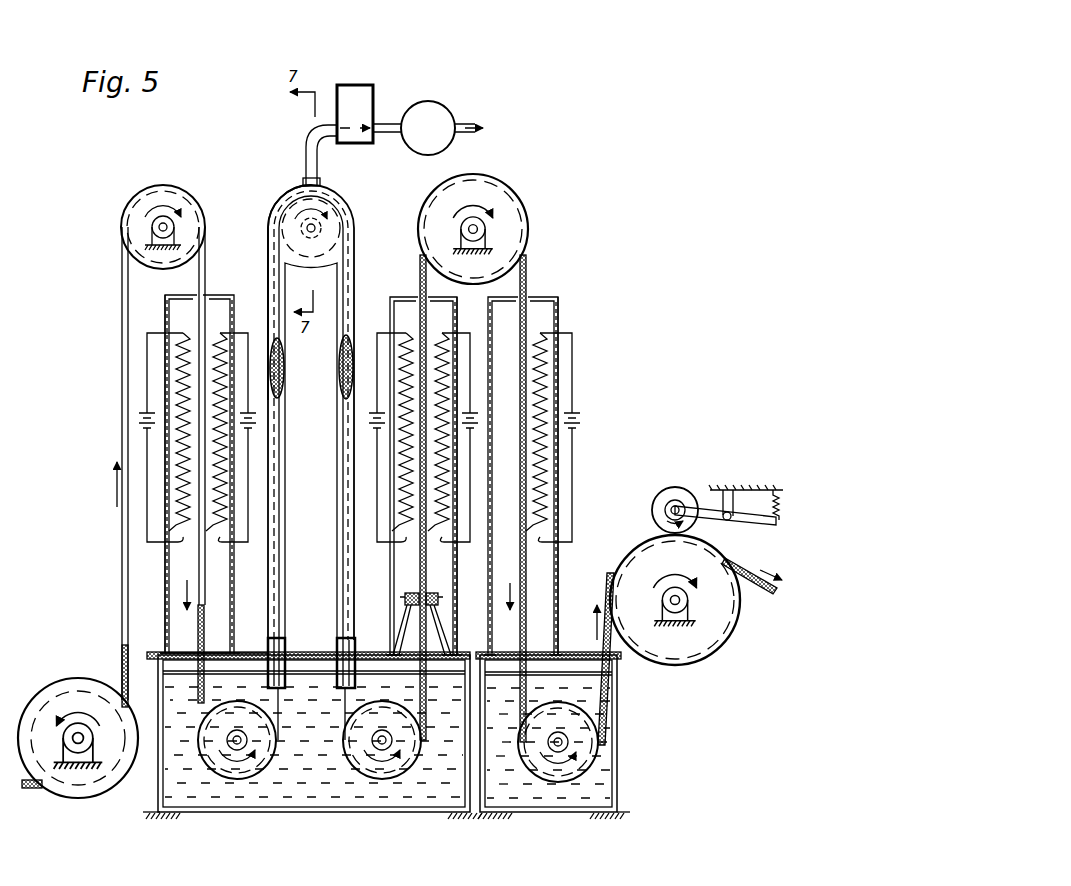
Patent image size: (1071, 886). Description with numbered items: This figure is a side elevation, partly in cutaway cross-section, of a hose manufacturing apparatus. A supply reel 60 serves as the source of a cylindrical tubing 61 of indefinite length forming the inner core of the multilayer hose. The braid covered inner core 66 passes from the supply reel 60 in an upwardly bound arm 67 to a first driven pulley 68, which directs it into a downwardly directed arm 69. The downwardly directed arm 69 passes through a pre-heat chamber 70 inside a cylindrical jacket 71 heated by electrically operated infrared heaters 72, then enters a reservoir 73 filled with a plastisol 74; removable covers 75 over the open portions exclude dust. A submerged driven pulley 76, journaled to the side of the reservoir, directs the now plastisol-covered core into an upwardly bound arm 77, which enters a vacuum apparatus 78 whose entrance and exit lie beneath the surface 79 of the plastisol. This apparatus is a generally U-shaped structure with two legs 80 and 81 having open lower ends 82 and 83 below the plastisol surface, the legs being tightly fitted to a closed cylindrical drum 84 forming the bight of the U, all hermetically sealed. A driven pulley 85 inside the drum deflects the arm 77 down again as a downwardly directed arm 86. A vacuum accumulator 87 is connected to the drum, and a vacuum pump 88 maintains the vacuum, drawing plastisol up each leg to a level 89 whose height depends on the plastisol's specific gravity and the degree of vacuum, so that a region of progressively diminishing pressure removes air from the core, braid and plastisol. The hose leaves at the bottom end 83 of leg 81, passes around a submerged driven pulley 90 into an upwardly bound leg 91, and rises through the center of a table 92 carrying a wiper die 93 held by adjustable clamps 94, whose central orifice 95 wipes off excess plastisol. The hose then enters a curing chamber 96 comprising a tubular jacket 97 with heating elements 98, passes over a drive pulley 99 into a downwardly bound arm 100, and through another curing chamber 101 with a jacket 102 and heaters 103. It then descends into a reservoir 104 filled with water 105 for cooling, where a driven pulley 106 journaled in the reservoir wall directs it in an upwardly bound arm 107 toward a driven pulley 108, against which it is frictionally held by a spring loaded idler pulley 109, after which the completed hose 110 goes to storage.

The supply reel 60 is at (80, 797).
The cylindrical tubing 61 is at (33, 789).
The braid covered inner core 66 is at (122, 643).
The upwardly bound arm 67 is at (118, 539).
The first driven pulley 68 is at (172, 190).
The downwardly directed arm 69 is at (207, 270).
The pre-heat chamber 70 is at (228, 300).
The cylindrical jacket 71 is at (165, 307).
The infrared heaters 72 is at (178, 548).
The reservoir 73 is at (288, 813).
The plastisol 74 is at (320, 781).
The removable covers 75 is at (250, 652).
The submerged driven pulley 76 is at (237, 780).
The upwardly bound arm 77 is at (284, 379).
The vacuum apparatus 78 is at (350, 200).
The surface 79 is at (304, 668).
The leg 80 is at (287, 462).
The leg 81 is at (338, 507).
The open lower end 82 is at (285, 684).
The open lower end 83 is at (330, 707).
The closed cylindrical drum 84 is at (275, 200).
The driven pulley 85 is at (342, 215).
The downwardly directed arm 86 is at (338, 392).
The vacuum accumulator 87 is at (373, 97).
The vacuum pump 88 is at (452, 112).
The level 89 is at (285, 350).
The submerged driven pulley 90 is at (390, 780).
The upwardly bound leg 91 is at (430, 577).
The table 92 is at (447, 630).
The wiper die 93 is at (401, 597).
The adjustable clamps 94 is at (440, 600).
The central orifice 95 is at (423, 592).
The curing chamber 96 is at (450, 322).
The tubular jacket 97 is at (459, 330).
The heating elements 98 is at (406, 548).
The drive pulley 99 is at (513, 197).
The downwardly bound arm 100 is at (529, 275).
The curing chamber 101 is at (520, 354).
The jacket 102 is at (559, 300).
The heaters 103 is at (546, 548).
The reservoir 104 is at (617, 775).
The water 105 is at (518, 782).
The driven pulley 106 is at (603, 735).
The upwardly bound arm 107 is at (613, 646).
The driven pulley 108 is at (718, 650).
The spring loaded idler pulley 109 is at (678, 489).
The completed hose 110 is at (752, 565).